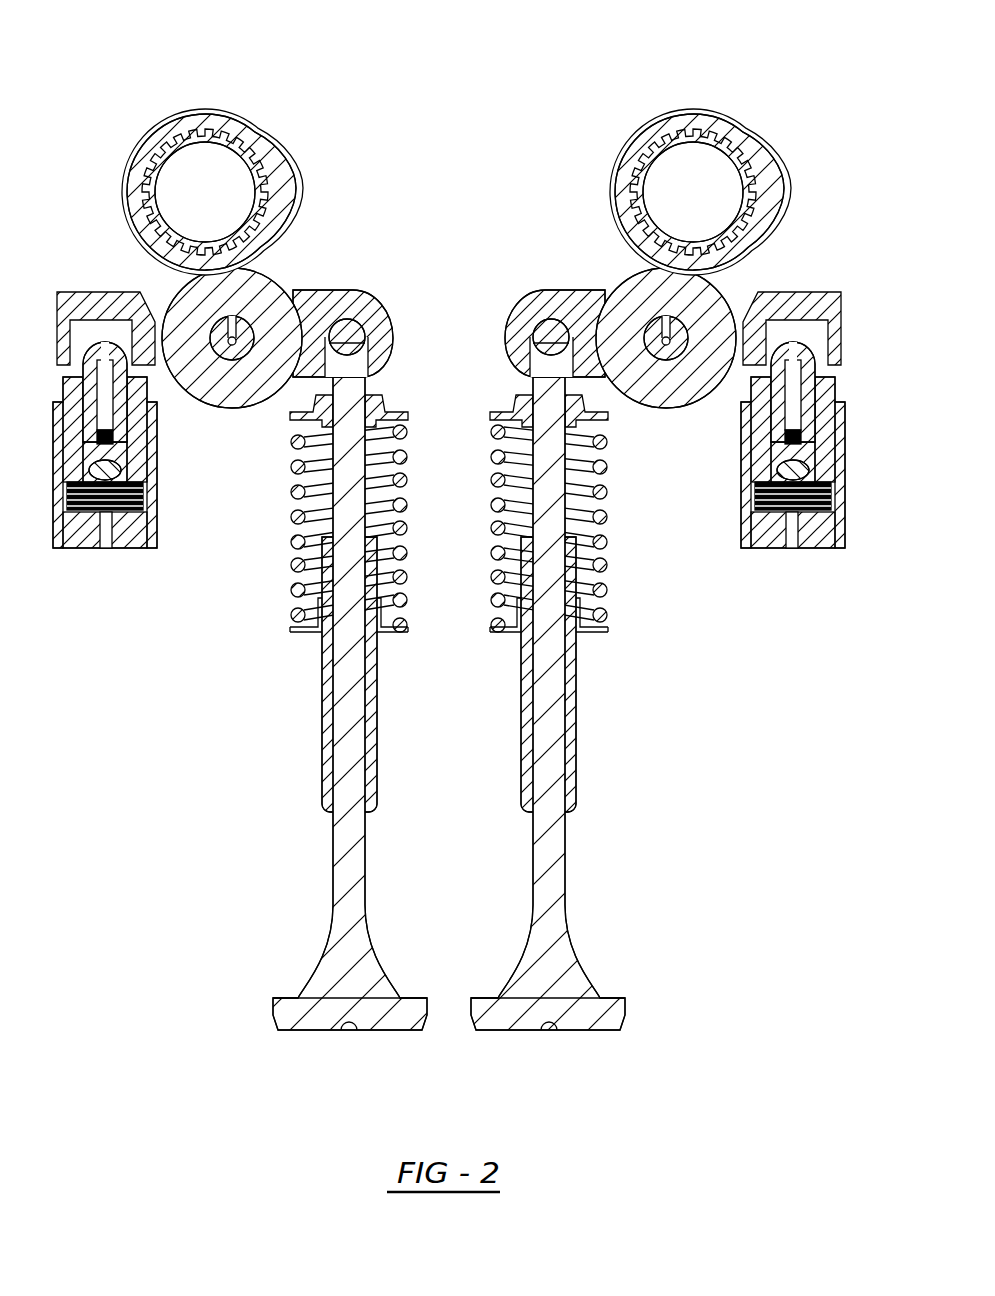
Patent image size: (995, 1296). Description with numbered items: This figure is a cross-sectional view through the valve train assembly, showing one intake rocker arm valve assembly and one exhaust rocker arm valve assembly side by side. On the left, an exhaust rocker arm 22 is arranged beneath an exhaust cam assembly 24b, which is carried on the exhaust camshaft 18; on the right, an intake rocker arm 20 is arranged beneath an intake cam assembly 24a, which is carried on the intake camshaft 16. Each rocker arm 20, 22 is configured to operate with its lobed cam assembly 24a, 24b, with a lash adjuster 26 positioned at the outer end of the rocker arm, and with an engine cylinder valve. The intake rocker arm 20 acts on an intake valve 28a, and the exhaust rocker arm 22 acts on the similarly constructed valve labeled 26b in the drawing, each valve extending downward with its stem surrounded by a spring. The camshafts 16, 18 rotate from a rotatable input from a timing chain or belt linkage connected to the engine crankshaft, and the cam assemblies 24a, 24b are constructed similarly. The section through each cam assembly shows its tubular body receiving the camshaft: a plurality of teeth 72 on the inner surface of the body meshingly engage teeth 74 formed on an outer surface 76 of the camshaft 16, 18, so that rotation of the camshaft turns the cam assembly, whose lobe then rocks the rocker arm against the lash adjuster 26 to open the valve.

The intake camshaft 16 is at (692, 155).
The exhaust camshaft 18 is at (213, 150).
The intake rocker arm 20 is at (567, 300).
The exhaust rocker arm 22 is at (327, 300).
The intake cam assembly 24a is at (622, 135).
The exhaust cam assembly 24b is at (277, 108).
The lash adjuster 26 is at (157, 462).
The exhaust valve 26b is at (334, 882).
The intake valve 28a is at (565, 900).
The teeth 72 is at (190, 158).
The teeth 74 is at (140, 167).
The outer surface 76 is at (140, 195).